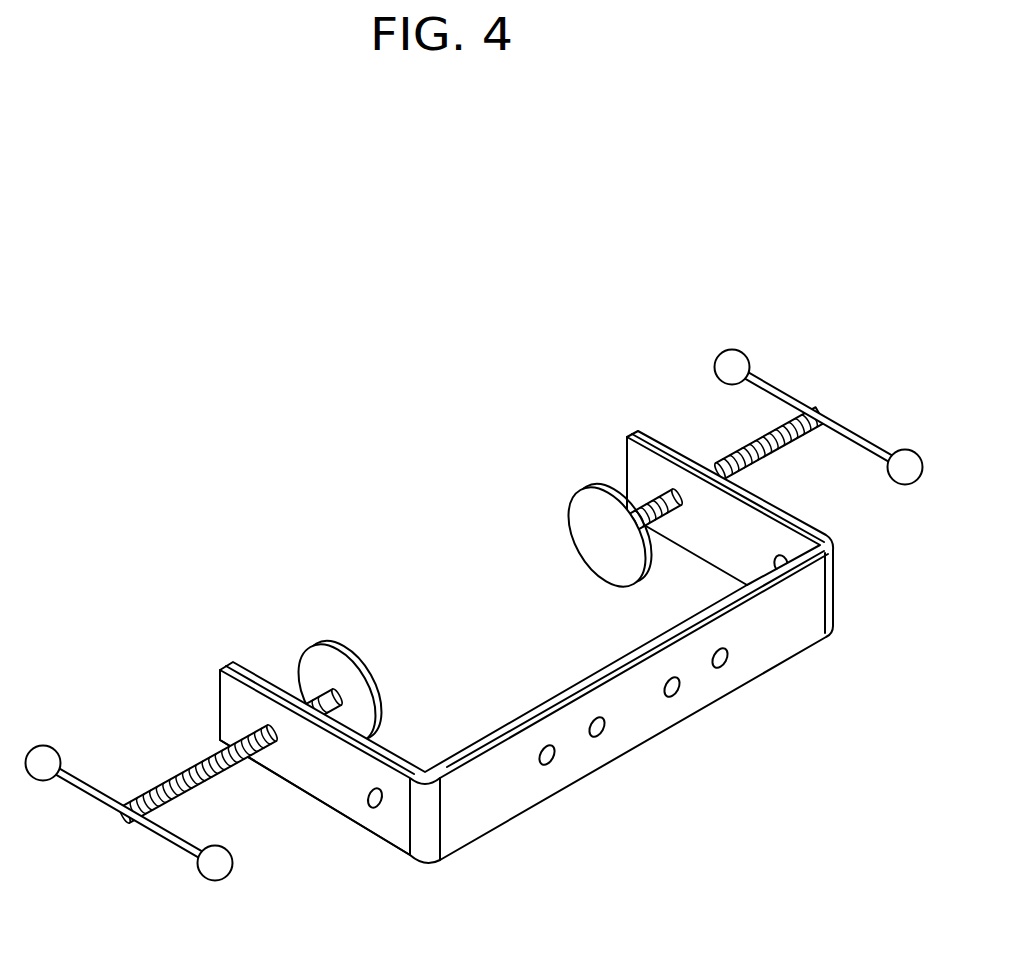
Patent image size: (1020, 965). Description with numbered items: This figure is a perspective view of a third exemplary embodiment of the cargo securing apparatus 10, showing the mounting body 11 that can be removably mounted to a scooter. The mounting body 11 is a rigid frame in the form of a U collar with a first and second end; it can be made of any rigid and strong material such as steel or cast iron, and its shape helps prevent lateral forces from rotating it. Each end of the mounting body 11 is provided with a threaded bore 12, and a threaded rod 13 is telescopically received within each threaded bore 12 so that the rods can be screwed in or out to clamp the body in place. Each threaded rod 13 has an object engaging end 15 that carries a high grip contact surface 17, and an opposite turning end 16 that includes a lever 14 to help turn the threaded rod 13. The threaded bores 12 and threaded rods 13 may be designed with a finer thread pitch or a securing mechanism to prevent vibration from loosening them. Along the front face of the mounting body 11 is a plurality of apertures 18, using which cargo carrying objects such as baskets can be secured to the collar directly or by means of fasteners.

The cargo securing apparatus 10 is at (398, 492).
The mounting body 11 is at (485, 800).
The threaded bore 12 is at (275, 750).
The threaded rod 13 is at (175, 772).
The lever 14 is at (748, 375).
The object engaging end 15 is at (319, 662).
The turning end 16 is at (823, 404).
The high grip contact surface 17 is at (597, 520).
The apertures 18 is at (672, 697).